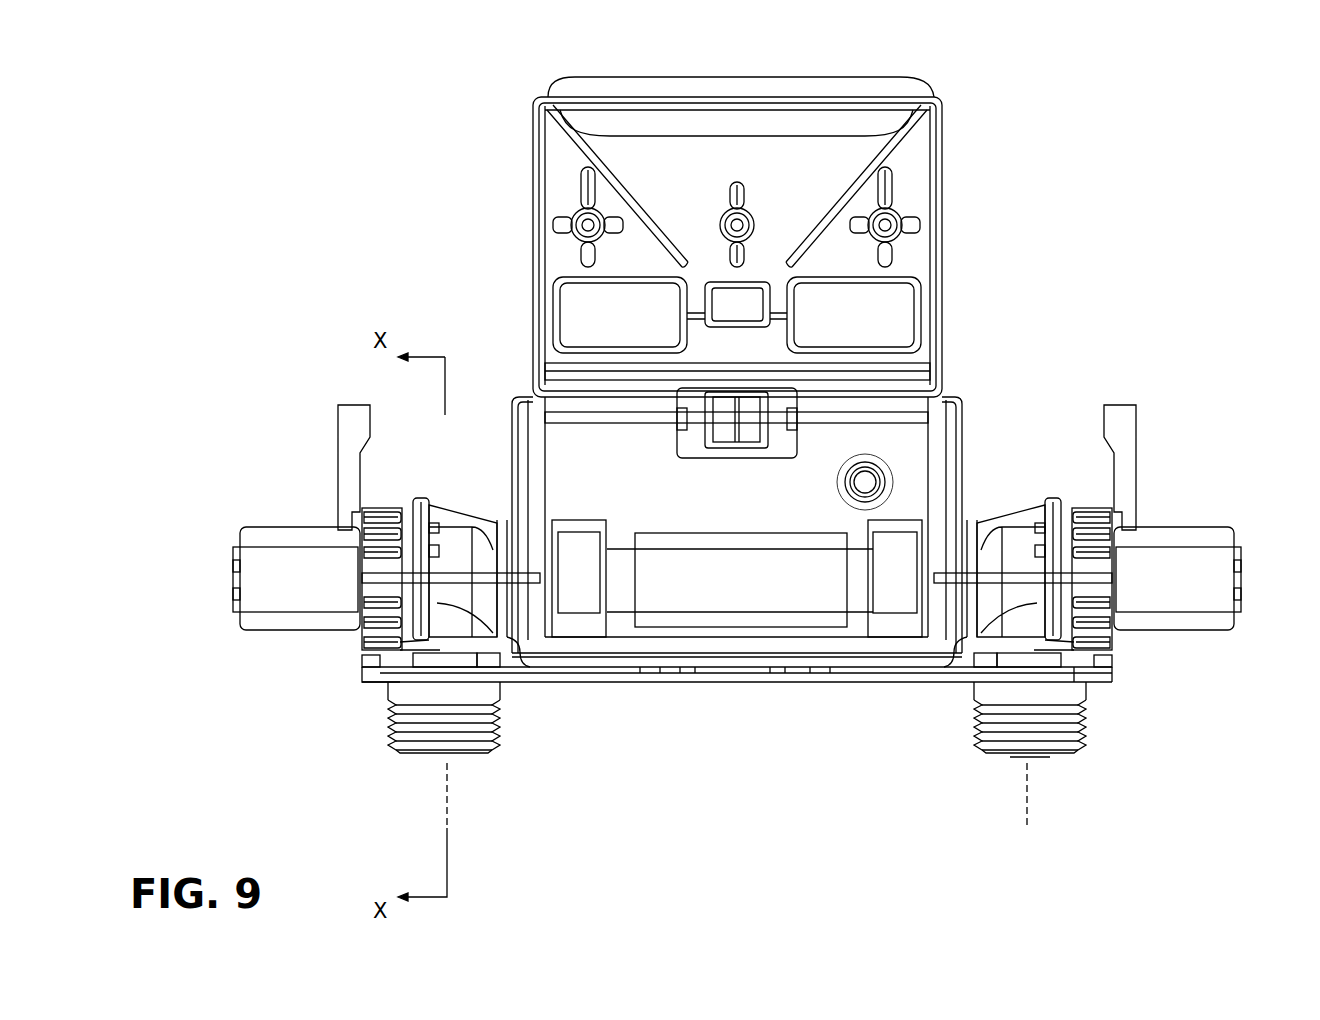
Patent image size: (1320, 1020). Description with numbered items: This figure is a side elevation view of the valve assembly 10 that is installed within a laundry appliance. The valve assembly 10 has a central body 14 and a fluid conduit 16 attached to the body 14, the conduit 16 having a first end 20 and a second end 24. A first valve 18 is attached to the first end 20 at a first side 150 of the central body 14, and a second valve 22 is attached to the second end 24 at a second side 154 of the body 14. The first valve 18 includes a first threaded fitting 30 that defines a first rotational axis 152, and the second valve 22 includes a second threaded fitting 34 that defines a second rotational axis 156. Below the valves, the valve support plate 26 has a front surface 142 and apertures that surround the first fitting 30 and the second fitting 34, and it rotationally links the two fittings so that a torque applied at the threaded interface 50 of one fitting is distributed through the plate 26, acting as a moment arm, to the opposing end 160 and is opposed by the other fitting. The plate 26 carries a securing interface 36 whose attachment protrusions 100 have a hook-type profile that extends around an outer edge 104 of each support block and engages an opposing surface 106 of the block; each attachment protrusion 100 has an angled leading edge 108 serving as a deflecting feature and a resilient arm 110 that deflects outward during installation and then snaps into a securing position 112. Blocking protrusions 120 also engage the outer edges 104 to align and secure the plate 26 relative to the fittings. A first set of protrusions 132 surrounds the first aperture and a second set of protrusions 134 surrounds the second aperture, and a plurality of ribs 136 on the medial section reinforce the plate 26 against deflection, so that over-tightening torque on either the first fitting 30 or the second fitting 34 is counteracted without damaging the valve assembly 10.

The valve assembly 10 is at (1058, 197).
The central body 14 is at (698, 160).
The conduit 16 is at (720, 607).
The first valve 18 is at (1162, 495).
The first end 20 is at (917, 623).
The second valve 22 is at (303, 500).
The second end 24 is at (545, 635).
The valve support plate 26 is at (650, 688).
The first fitting 30 is at (1080, 688).
The second fitting 34 is at (395, 690).
The securing interface 36 is at (1097, 657).
The threaded interface 50 is at (1050, 762).
The attachment protrusions 100 is at (1060, 643).
The outer edge 104 is at (393, 727).
The opposing surface 106 is at (490, 640).
The angled leading edge 108 is at (1020, 663).
The resilient arm 110 is at (1042, 657).
The securing position 112 is at (958, 668).
The blocking protrusions 120 is at (993, 680).
The first set of protrusions 132 is at (1077, 677).
The second set of protrusions 134 is at (362, 655).
The ribs 136 is at (698, 673).
The front surface 142 is at (790, 680).
The first side 150 is at (957, 508).
The first rotational axis 152 is at (1030, 788).
The second side 154 is at (512, 465).
The second rotational axis 156 is at (443, 773).
The opposing end 160 is at (362, 672).